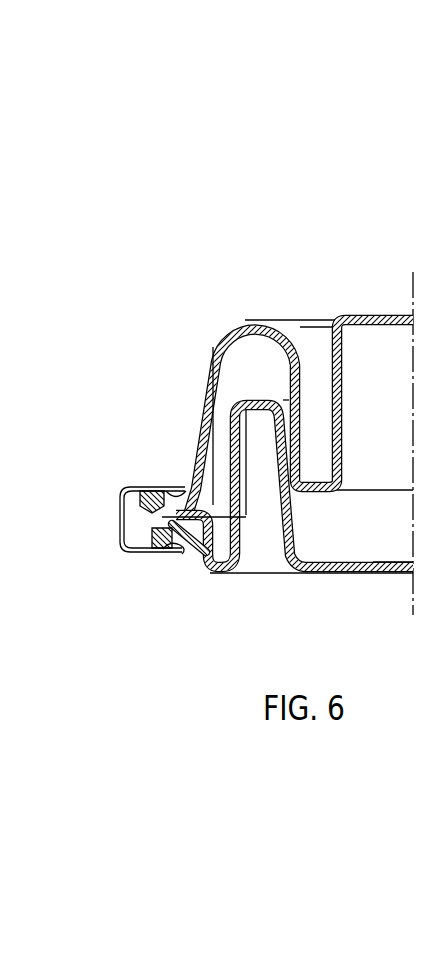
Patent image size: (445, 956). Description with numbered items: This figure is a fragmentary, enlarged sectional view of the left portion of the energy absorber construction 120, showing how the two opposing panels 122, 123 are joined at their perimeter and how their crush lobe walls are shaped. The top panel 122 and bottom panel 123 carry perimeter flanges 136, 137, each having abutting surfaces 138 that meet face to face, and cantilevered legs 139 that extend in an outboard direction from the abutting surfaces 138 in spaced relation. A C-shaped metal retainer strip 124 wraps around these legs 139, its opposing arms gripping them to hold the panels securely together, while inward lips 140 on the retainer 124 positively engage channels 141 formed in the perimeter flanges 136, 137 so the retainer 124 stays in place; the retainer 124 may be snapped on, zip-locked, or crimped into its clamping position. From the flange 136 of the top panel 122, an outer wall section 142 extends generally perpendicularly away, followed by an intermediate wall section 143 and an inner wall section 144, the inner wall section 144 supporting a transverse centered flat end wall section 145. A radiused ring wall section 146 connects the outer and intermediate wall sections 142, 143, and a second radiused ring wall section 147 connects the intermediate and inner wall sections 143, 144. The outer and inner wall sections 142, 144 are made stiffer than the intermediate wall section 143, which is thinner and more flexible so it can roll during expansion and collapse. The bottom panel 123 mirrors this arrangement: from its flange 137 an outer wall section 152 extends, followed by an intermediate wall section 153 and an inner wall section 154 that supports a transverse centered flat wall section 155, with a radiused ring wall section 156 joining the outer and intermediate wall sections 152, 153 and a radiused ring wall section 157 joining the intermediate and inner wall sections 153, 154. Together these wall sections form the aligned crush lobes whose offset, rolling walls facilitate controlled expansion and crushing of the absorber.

The energy absorber construction 120 is at (229, 278).
The panel 122 is at (351, 314).
The panel 123 is at (316, 582).
The C-shaped metal retainer strip 124 is at (128, 487).
The perimeter flange 136 is at (177, 490).
The perimeter flange 137 is at (182, 549).
The abutting surfaces 138 is at (165, 548).
The cantilevered legs 139 is at (131, 497).
The inward lips 140 is at (186, 482).
The channels 141 is at (180, 474).
The outer wall section 142 is at (199, 432).
The intermediate wall section 143 is at (297, 352).
The inner wall section 144 is at (344, 365).
The flat end wall section 145 is at (373, 317).
The radiused ring wall section 146 is at (241, 322).
The radiused ring wall section 147 is at (318, 455).
The outer wall section 152 is at (193, 545).
The intermediate wall section 153 is at (242, 532).
The inner wall section 154 is at (285, 503).
The flat wall section 155 is at (333, 575).
The radiused ring wall section 156 is at (213, 574).
The radiused ring wall section 157 is at (258, 411).